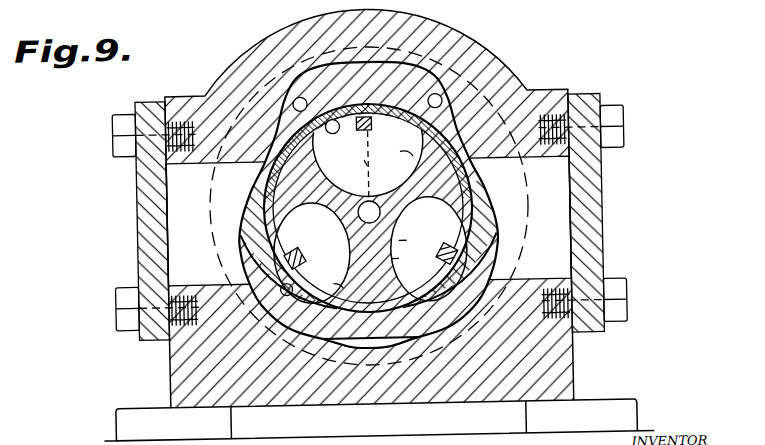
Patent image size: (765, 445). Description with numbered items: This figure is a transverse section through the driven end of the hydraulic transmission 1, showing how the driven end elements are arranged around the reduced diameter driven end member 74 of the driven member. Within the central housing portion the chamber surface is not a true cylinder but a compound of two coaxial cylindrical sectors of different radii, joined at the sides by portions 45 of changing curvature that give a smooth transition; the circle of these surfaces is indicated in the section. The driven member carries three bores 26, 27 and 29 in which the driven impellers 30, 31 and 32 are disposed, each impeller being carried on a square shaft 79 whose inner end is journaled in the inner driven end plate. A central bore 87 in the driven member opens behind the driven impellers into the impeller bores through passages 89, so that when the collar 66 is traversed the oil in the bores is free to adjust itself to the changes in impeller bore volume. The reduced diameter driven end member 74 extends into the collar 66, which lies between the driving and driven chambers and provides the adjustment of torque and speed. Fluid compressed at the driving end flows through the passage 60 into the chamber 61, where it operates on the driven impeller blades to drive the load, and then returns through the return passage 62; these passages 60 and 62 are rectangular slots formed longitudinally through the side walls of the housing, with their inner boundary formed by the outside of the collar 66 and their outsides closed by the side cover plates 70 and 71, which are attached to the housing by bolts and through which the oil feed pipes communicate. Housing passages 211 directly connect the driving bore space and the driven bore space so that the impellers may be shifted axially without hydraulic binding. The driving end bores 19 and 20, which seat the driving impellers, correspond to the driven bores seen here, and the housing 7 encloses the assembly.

The transmission 1 is at (550, 92).
The housing 7 is at (438, 23).
The cylindrical bore 19 is at (446, 263).
The cylindrical bore 20 is at (336, 134).
The bore 26 is at (395, 154).
The bore 27 is at (406, 261).
The bore 29 is at (326, 283).
The driven impeller 30 is at (402, 144).
The driven impeller 31 is at (458, 239).
The driven impeller 32 is at (313, 234).
The portion of changing curvature 45 is at (250, 199).
The passage 60 is at (200, 239).
The chamber 61 is at (378, 350).
The return passage 62 is at (562, 226).
The collar 66 is at (488, 273).
The side cover plate 70 is at (603, 214).
The side cover plate 71 is at (137, 239).
The reduced diameter driven end member 74 is at (382, 302).
The square shaft 79 is at (369, 117).
The central bore 87 is at (381, 210).
The passage 89 is at (374, 209).
The housing passage 211 is at (300, 90).